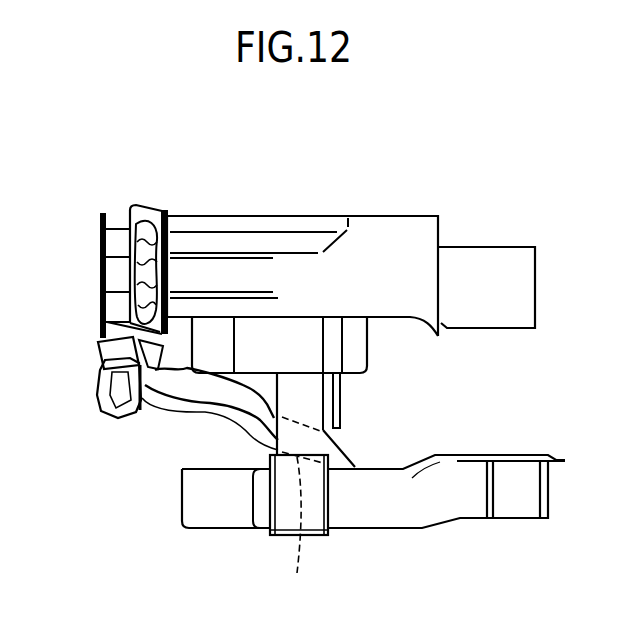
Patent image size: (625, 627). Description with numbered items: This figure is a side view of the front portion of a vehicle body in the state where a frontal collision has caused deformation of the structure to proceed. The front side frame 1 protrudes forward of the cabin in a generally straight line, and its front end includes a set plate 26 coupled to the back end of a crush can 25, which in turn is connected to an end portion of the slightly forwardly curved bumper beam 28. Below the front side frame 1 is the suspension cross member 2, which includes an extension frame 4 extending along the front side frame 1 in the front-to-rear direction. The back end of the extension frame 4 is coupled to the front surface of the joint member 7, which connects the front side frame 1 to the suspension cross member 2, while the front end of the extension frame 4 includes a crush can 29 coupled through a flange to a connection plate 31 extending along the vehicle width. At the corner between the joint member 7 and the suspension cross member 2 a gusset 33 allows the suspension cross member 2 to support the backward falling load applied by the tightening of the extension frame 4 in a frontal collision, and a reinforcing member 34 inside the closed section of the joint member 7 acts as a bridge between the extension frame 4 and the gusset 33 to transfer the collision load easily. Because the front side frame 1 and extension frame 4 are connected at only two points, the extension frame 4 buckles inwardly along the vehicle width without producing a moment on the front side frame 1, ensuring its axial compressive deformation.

The front side frame 1 is at (266, 216).
The suspension cross member 2 is at (360, 530).
The extension frame 4 is at (183, 413).
The joint member 7 is at (326, 392).
The crush can 25 is at (141, 215).
The set plate 26 is at (169, 215).
The bumper beam 28 is at (100, 255).
The crush can 29 is at (103, 390).
The connection plate 31 is at (108, 350).
The gusset 33 is at (340, 448).
The reinforcing member 34 is at (299, 533).